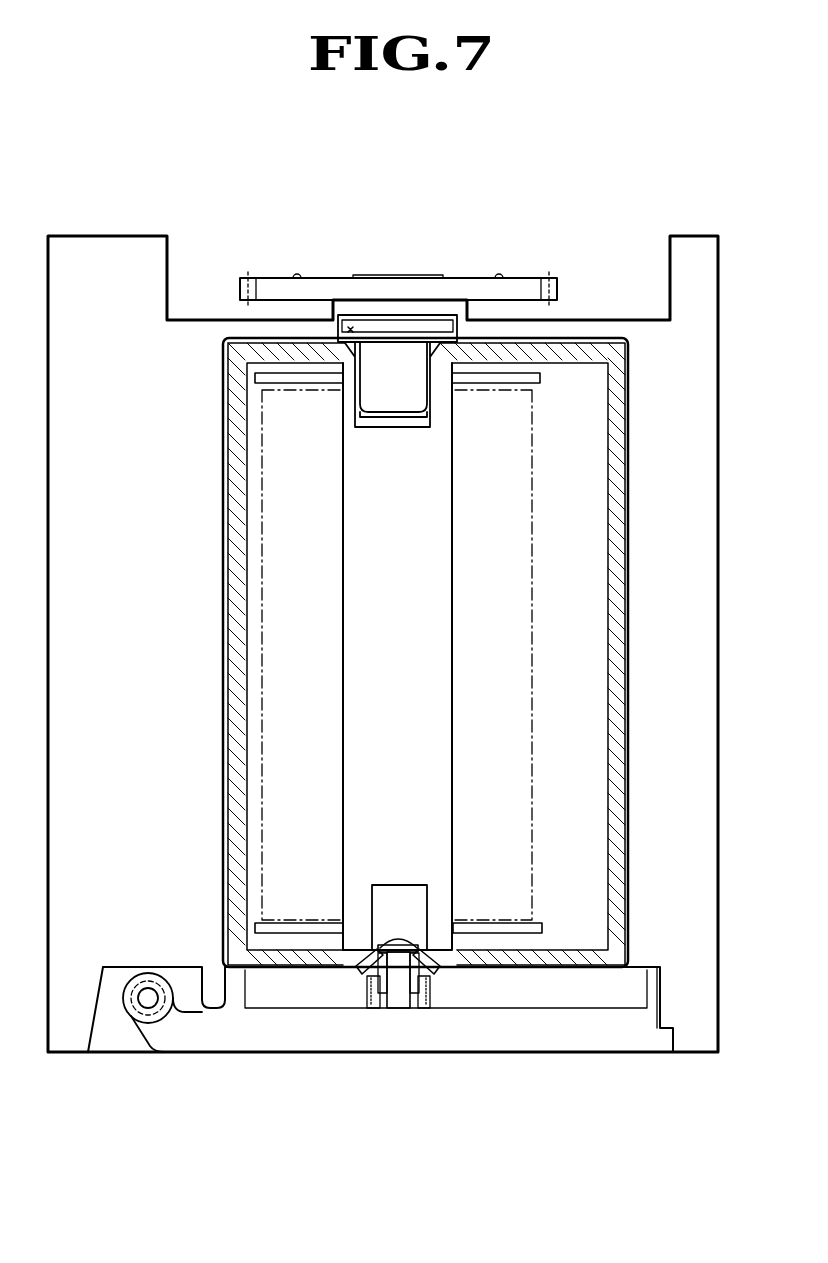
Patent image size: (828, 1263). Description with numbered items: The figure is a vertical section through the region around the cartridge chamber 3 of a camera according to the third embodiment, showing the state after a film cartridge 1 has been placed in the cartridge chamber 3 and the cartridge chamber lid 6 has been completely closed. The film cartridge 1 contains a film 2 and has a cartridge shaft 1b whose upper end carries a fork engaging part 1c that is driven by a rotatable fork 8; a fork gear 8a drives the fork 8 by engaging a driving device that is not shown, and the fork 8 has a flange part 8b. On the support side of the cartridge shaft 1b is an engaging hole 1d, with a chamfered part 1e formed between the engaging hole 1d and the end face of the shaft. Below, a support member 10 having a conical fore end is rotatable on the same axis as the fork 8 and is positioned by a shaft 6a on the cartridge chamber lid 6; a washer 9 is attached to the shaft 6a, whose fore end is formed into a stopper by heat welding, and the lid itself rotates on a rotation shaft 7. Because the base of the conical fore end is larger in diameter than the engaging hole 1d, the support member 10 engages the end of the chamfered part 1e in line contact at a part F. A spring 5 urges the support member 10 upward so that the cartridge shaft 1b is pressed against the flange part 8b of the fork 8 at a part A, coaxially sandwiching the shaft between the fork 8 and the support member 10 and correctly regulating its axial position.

The film cartridge 1 is at (582, 475).
The cartridge shaft 1b is at (420, 635).
The fork engaging part 1c is at (432, 397).
The engaging hole 1d is at (408, 897).
The chamfered part 1e is at (457, 916).
The film 2 is at (500, 544).
The cartridge chamber 3 is at (628, 700).
The spring 5 is at (367, 1005).
The cartridge chamber lid 6 is at (585, 1037).
The shaft 6a is at (397, 1008).
The rotation shaft 7 is at (143, 1002).
The fork 8 is at (402, 362).
The fork gear 8a is at (522, 290).
The flange part 8b is at (363, 343).
The washer 9 is at (385, 927).
The support member 10 is at (437, 977).
The part A is at (351, 328).
The part F is at (433, 945).